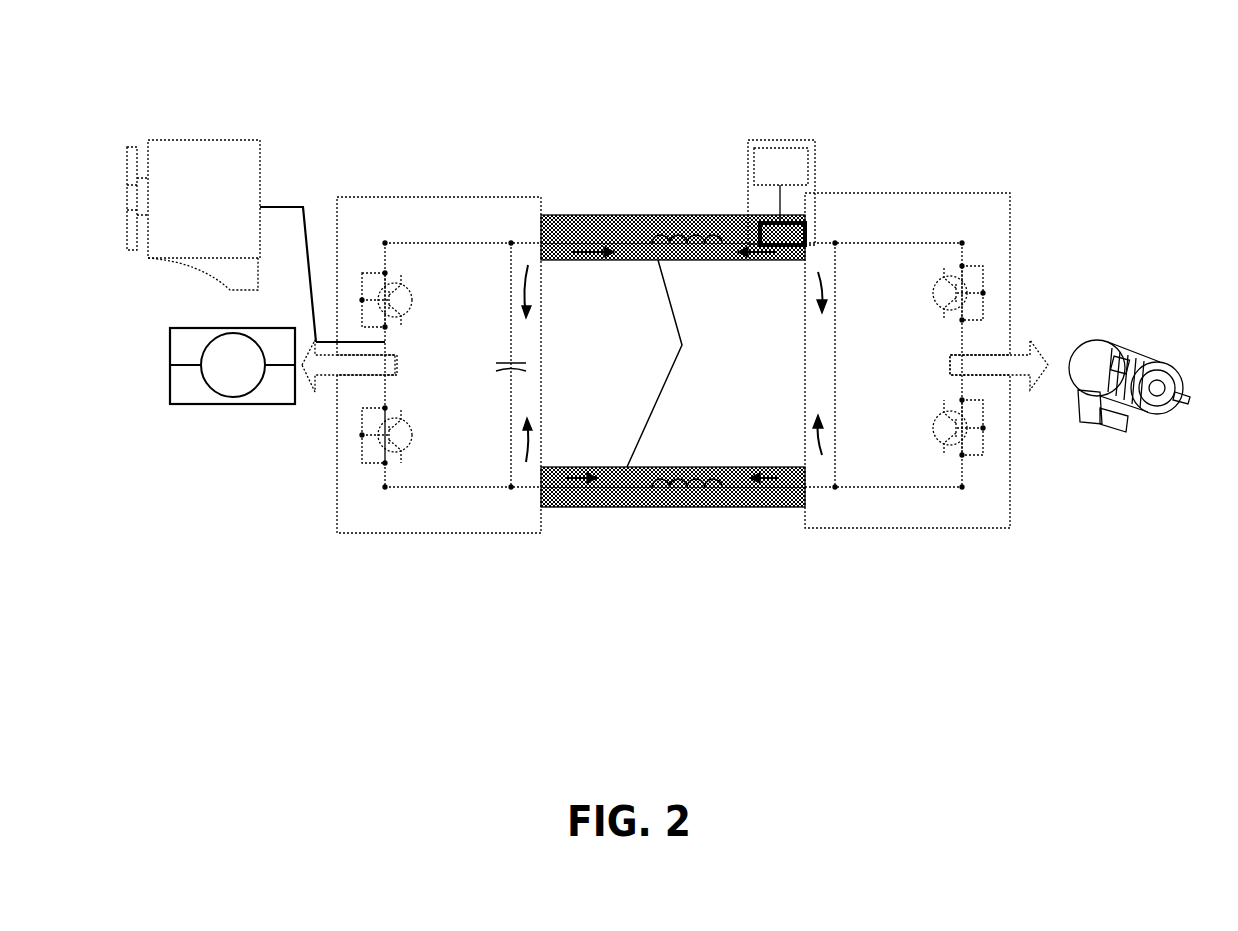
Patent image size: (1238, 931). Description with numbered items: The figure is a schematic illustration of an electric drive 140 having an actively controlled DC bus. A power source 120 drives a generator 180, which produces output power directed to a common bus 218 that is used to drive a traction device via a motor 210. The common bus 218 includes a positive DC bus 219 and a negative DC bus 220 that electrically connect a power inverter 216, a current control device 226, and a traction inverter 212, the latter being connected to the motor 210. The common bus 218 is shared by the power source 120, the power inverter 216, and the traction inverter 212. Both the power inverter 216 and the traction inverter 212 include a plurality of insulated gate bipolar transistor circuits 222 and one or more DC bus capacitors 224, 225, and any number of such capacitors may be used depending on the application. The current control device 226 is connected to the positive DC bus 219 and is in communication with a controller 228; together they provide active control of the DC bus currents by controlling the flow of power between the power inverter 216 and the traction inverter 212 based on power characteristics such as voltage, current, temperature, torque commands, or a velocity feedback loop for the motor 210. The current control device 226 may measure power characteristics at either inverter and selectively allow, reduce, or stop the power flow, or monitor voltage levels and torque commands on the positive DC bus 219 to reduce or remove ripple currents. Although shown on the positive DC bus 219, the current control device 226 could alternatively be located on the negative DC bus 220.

The electric drive 140 is at (1135, 104).
The power source 120 is at (172, 140).
The generator 180 is at (192, 328).
The power inverter 216 is at (368, 197).
The insulated gate bipolar transistor circuit 222 is at (405, 293).
The positive DC bus 219 is at (633, 215).
The negative DC bus 220 is at (633, 507).
The common bus 218 is at (682, 345).
The DC bus capacitor 224 is at (532, 378).
The DC bus capacitor 225 is at (830, 358).
The current control device 226 is at (815, 147).
The controller 228 is at (762, 150).
The traction inverter 212 is at (1010, 222).
The motor 210 is at (1125, 330).